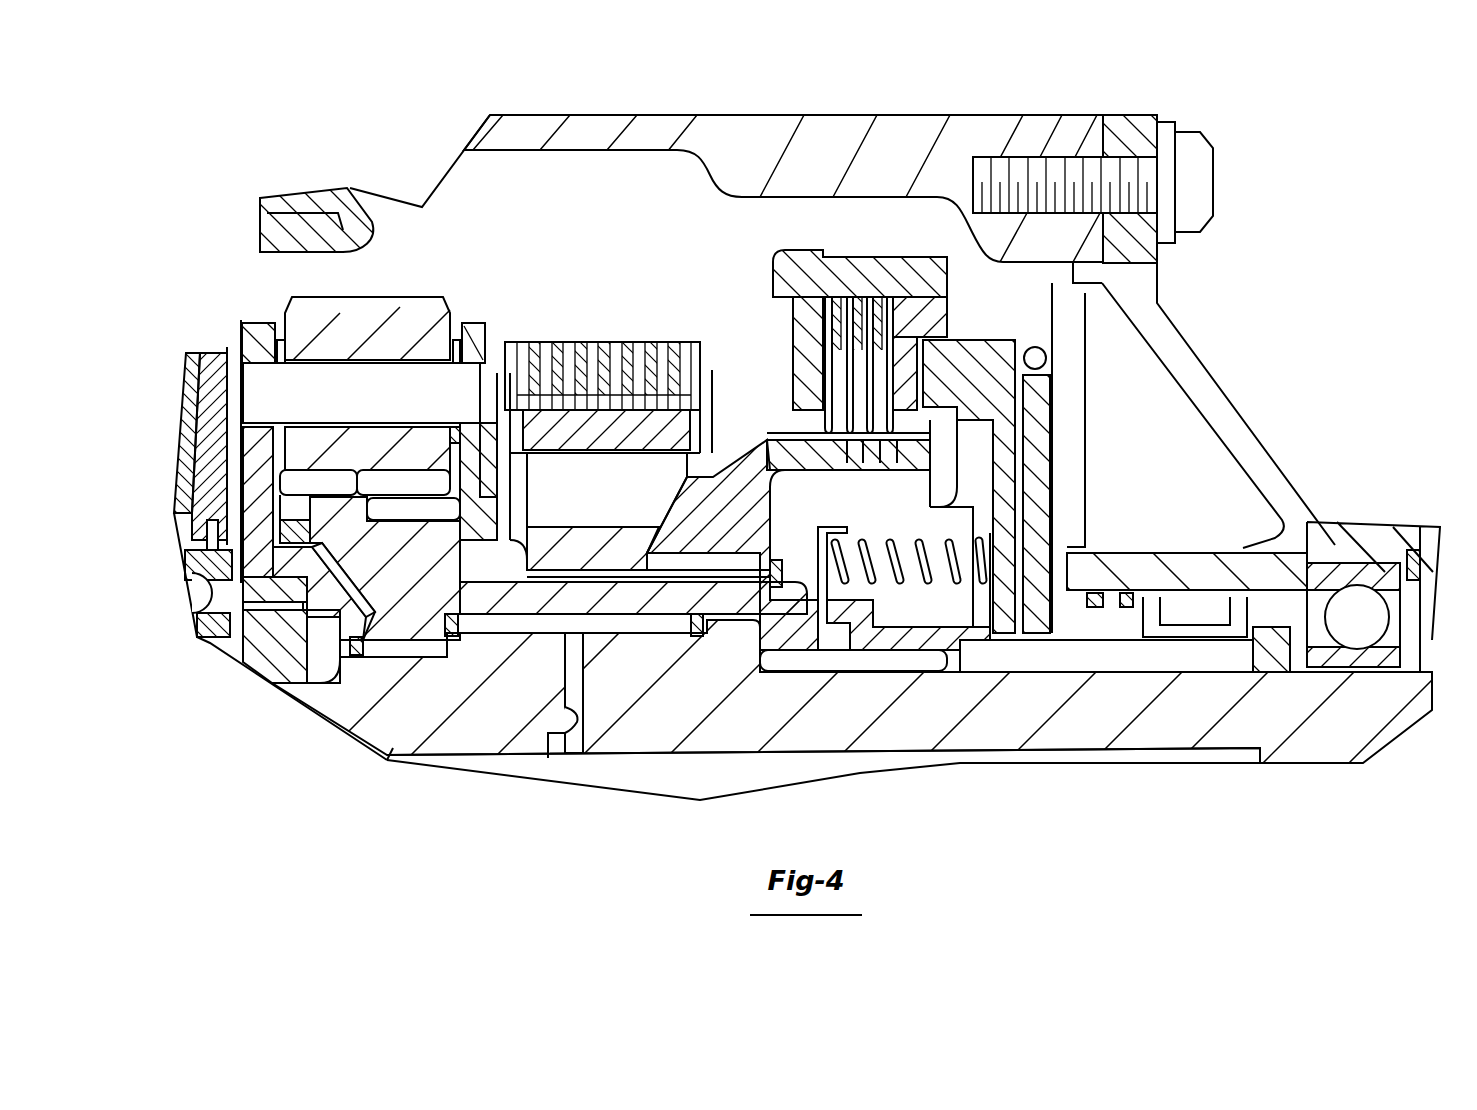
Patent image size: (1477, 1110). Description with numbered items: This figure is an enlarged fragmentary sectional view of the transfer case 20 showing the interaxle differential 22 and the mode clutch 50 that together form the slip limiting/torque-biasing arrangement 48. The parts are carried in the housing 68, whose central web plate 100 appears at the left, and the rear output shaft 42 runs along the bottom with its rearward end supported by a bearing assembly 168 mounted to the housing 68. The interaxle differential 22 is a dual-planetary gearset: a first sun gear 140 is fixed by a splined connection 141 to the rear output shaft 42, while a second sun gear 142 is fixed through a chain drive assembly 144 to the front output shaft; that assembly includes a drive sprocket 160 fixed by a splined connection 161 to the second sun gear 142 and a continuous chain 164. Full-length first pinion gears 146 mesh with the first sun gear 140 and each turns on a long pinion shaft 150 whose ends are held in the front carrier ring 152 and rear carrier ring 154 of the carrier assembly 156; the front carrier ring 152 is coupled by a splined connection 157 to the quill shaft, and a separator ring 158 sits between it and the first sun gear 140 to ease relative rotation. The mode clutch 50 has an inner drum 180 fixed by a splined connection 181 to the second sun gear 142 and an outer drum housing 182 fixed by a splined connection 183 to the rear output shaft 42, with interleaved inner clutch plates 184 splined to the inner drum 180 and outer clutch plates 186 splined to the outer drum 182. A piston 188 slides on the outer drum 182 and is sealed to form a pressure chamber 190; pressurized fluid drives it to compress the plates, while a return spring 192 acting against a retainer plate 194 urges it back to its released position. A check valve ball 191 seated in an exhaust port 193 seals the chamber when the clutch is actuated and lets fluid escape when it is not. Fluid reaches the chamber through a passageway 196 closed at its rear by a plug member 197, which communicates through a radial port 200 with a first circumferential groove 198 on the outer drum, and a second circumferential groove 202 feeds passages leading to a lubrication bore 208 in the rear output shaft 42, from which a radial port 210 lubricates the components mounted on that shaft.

The transfer case 20 is at (1106, 90).
The interaxle differential 22 is at (374, 270).
The rear output shaft 42 is at (1343, 736).
The slip limiting/torque-biasing arrangement 48 is at (613, 209).
The mode clutch 50 is at (1153, 315).
The housing 68 is at (917, 140).
The central web plate 100 is at (216, 348).
The first sun gear 140 is at (380, 590).
The splined connection 141 is at (349, 693).
The second sun gear 142 is at (379, 758).
The chain drive assembly 144 is at (704, 332).
The first pinion gears 146 is at (414, 333).
The long pinion shaft 150 is at (372, 411).
The front carrier ring 152 is at (234, 312).
The rear carrier ring 154 is at (481, 337).
The carrier assembly 156 is at (239, 320).
The splined connection 157 is at (254, 605).
The separator ring 158 is at (216, 645).
The drive sprocket 160 is at (618, 482).
The splined connection 161 is at (626, 591).
The continuous chain 164 is at (532, 346).
The bearing assembly 168 is at (1385, 576).
The inner drum 180 is at (757, 471).
The splined connection 181 is at (740, 601).
The outer drum housing 182 is at (1040, 427).
The splined connection 183 is at (918, 662).
The inner clutch plates 184 is at (826, 438).
The outer clutch plates 186 is at (830, 420).
The piston 188 is at (1040, 457).
The pressure chamber 190 is at (1040, 523).
The ball 191 is at (1047, 345).
The return spring 192 is at (863, 540).
The exhaust port 193 is at (1058, 360).
The retainer plate 194 is at (801, 603).
The passageway 196 is at (1090, 644).
The plug member 197 is at (1273, 644).
The first circumferential groove 198 is at (1138, 572).
The radial port 200 is at (1227, 600).
The second circumferential groove 202 is at (1346, 528).
The lubrication bore 208 is at (1217, 769).
The radial port 210 is at (548, 758).